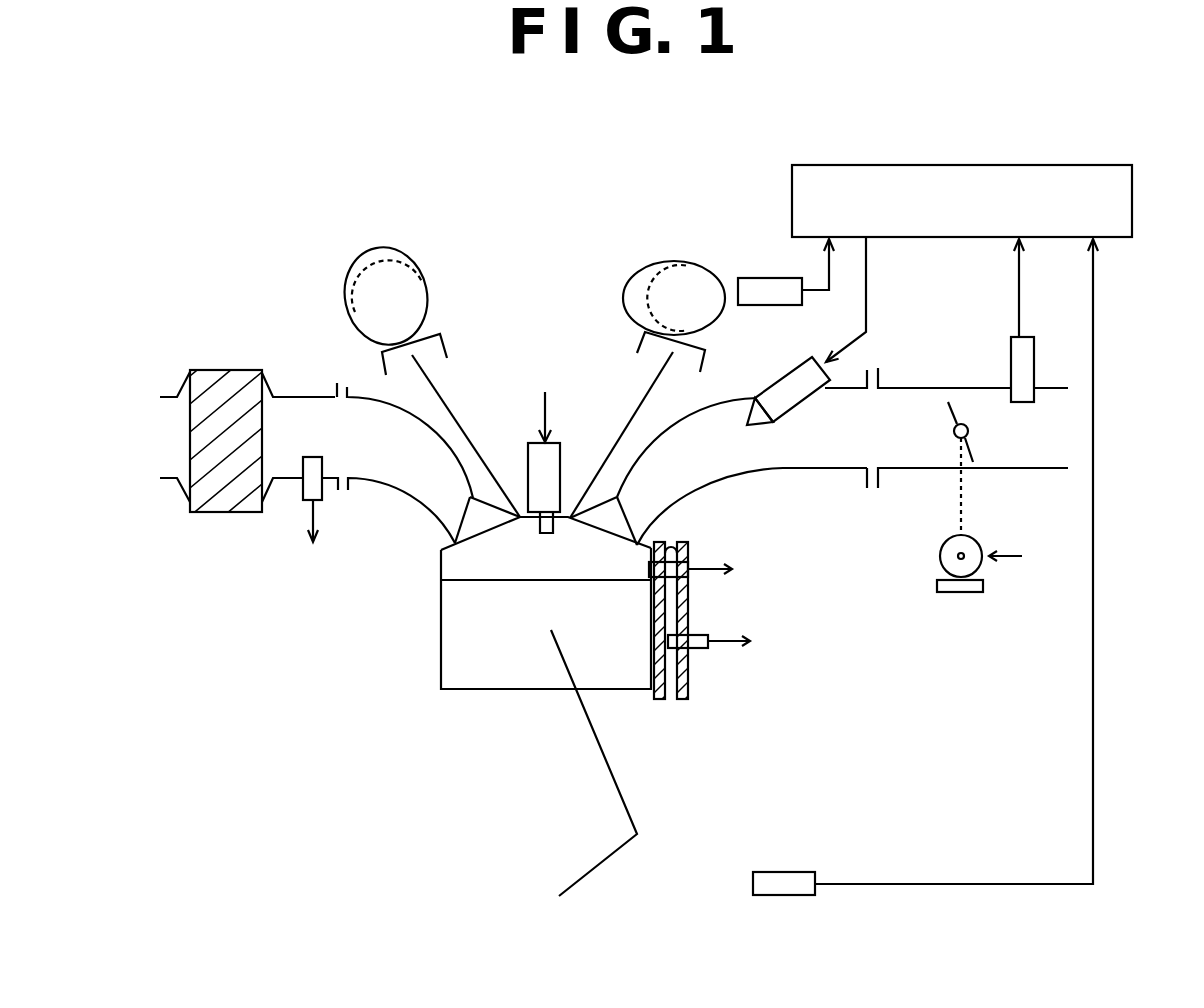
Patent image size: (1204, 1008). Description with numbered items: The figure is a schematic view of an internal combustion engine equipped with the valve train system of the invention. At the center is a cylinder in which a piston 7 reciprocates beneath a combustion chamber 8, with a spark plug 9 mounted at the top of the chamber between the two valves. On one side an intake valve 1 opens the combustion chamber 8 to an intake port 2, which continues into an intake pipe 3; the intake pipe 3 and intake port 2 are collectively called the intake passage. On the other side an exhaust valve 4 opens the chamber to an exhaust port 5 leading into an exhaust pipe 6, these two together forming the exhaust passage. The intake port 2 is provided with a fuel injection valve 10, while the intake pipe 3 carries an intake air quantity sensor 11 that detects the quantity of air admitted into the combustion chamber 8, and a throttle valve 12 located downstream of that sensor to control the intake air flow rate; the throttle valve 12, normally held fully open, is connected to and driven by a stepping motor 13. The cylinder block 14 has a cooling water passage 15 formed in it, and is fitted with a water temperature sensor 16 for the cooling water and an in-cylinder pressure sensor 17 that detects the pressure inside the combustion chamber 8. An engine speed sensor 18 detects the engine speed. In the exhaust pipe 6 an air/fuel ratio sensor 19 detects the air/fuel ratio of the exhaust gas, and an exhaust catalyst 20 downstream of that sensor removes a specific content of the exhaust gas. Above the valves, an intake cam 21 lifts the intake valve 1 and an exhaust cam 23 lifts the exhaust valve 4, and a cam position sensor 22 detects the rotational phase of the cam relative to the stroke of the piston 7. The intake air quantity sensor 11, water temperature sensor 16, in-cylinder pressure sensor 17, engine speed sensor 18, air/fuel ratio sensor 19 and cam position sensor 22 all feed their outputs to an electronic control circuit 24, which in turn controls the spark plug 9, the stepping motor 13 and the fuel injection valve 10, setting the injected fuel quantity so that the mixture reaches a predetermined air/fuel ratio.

The intake valve 1 is at (652, 402).
The intake port 2 is at (757, 478).
The intake pipe 3 is at (912, 402).
The exhaust valve 4 is at (433, 402).
The exhaust port 5 is at (390, 493).
The exhaust pipe 6 is at (297, 410).
The piston 7 is at (488, 675).
The combustion chamber 8 is at (490, 571).
The spark plug 9 is at (552, 465).
The fuel injection valve 10 is at (780, 387).
The intake air quantity sensor 11 is at (1035, 360).
The throttle valve 12 is at (953, 405).
The stepping motor 13 is at (953, 587).
The cylinder block 14 is at (680, 690).
The cooling water passage 15 is at (673, 672).
The water temperature sensor 16 is at (687, 635).
The in-cylinder pressure sensor 17 is at (690, 563).
The engine speed sensor 18 is at (793, 877).
The air/fuel ratio sensor 19 is at (307, 483).
The exhaust catalyst 20 is at (218, 373).
The intake cam 21 is at (680, 277).
The cam position sensor 22 is at (768, 293).
The exhaust cam 23 is at (417, 287).
The electronic control circuit (ECU) 24 is at (1133, 197).